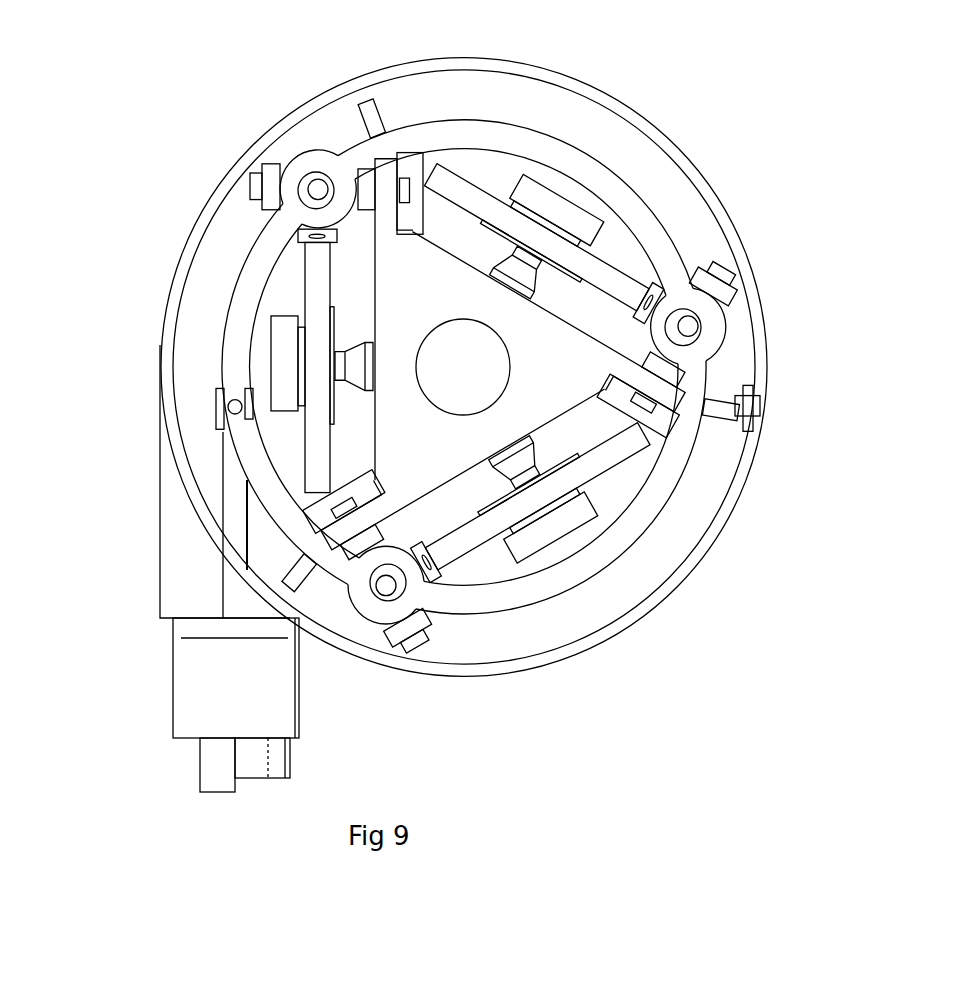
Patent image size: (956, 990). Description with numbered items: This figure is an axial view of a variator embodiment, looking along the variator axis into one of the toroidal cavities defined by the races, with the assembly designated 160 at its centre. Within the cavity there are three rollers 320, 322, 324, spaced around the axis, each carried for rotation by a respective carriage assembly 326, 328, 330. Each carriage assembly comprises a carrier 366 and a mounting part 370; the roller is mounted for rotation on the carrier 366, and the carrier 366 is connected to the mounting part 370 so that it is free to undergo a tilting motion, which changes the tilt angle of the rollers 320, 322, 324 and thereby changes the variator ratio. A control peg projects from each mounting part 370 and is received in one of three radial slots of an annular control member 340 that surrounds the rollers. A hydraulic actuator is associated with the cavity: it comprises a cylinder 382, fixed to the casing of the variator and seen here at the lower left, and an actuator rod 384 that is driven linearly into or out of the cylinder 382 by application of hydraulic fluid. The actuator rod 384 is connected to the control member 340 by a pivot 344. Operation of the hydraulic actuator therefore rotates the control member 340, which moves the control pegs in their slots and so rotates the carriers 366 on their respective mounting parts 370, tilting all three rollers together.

The actuator assembly 160 is at (444, 299).
The roller 320 is at (478, 192).
The roller 322 is at (607, 467).
The roller 324 is at (313, 447).
The carriage assembly 326 is at (625, 230).
The carriage assembly 328 is at (501, 590).
The carriage assembly 330 is at (262, 297).
The annular control member 340 is at (265, 516).
The pivot 344 is at (233, 407).
The carrier 366 is at (283, 350).
The mounting part 370 is at (260, 165).
The cylinder 382 is at (175, 683).
The actuator rod 384 is at (225, 500).